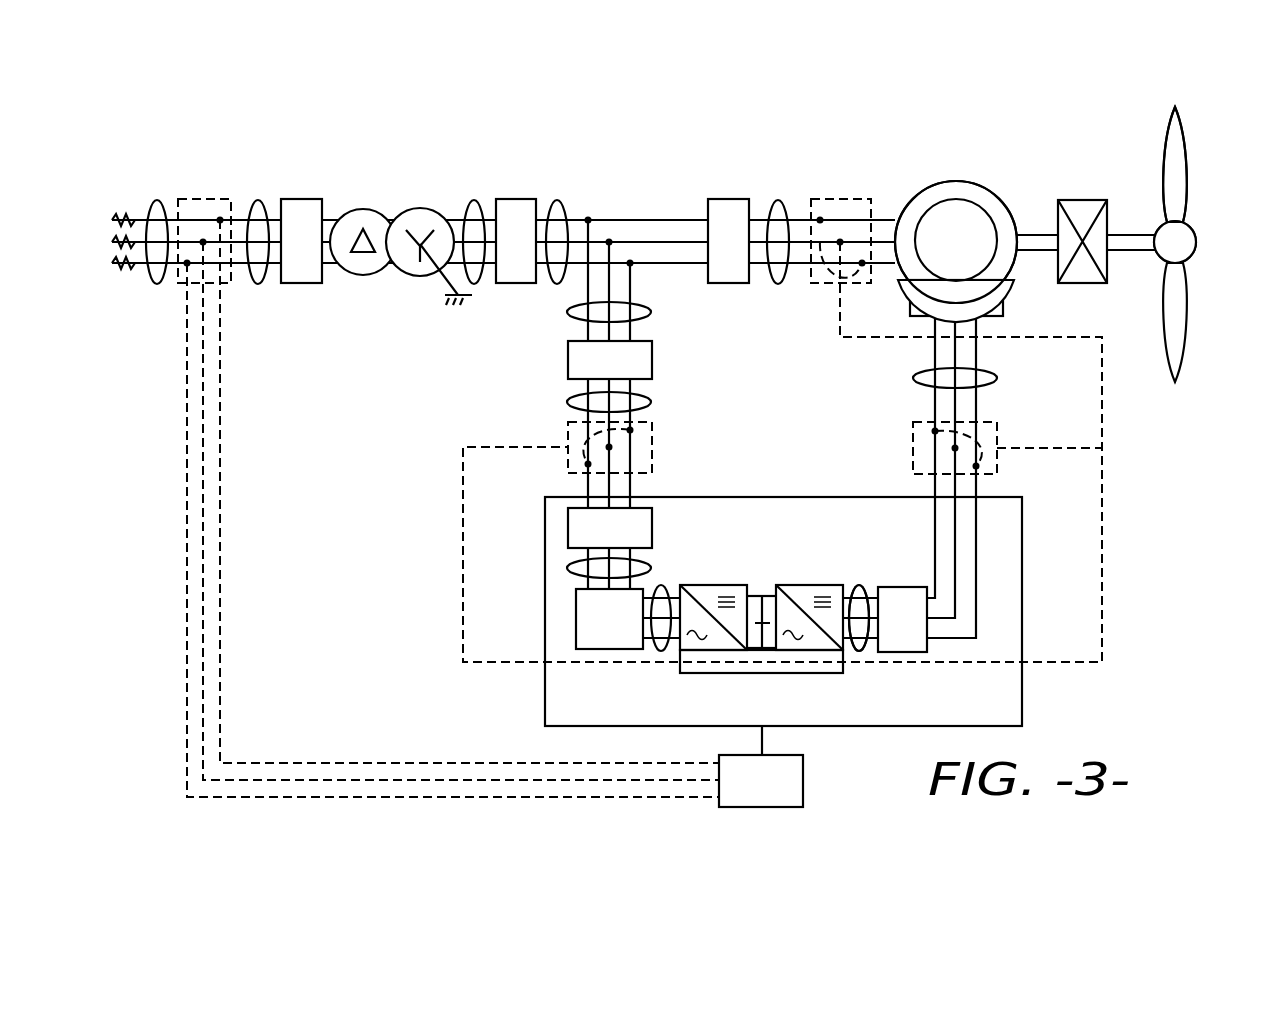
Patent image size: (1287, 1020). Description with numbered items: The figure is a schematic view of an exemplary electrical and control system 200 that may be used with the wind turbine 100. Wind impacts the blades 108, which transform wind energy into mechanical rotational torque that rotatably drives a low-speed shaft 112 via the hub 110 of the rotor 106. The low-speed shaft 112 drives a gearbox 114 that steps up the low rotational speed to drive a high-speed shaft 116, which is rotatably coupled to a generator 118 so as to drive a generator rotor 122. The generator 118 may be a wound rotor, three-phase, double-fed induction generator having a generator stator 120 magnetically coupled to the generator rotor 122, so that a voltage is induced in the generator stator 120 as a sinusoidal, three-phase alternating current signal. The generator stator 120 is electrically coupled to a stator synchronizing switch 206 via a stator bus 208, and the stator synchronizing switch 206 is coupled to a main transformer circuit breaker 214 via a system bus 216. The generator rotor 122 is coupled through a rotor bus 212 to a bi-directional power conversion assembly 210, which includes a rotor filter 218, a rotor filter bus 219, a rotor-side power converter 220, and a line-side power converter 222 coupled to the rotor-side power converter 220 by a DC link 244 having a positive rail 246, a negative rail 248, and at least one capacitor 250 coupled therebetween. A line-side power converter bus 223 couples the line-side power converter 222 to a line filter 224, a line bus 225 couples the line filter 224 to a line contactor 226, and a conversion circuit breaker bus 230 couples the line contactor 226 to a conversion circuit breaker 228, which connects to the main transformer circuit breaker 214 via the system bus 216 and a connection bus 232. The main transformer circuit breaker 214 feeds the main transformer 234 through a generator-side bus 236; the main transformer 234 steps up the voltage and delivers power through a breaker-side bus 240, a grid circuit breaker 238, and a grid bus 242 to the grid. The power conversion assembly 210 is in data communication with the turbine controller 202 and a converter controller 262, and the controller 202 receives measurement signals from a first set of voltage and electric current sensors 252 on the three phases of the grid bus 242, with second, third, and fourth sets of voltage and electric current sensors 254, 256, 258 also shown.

The wind turbine 100 is at (1141, 100).
The rotor 106 is at (1203, 206).
The blades 108 is at (1187, 162).
The hub 110 is at (1200, 237).
The low-speed shaft 112 is at (1122, 235).
The gearbox 114 is at (1086, 200).
The high-speed shaft 116 is at (1044, 235).
The generator 118 is at (949, 156).
The generator stator 120 is at (976, 186).
The generator rotor 122 is at (933, 221).
The electrical and control system 200 is at (357, 123).
The turbine controller 202 is at (741, 795).
The stator synchronizing switch 206 is at (729, 199).
The stator bus 208 is at (781, 199).
The power conversion assembly 210 is at (1022, 582).
The rotor bus 212 is at (998, 378).
The main transformer circuit breaker 214 is at (516, 199).
The system bus 216 is at (558, 198).
The rotor filter 218 is at (893, 587).
The rotor filter bus 219 is at (862, 588).
The rotor-side power converter 220 is at (858, 652).
The line-side power converter 222 is at (680, 652).
The line-side power converter bus 223 is at (662, 589).
The line filter 224 is at (576, 633).
The line bus 225 is at (568, 575).
The line contactor 226 is at (568, 533).
The conversion circuit breaker 228 is at (652, 360).
The conversion circuit breaker bus 230 is at (652, 402).
The connection bus 232 is at (652, 312).
The main transformer 234 is at (406, 208).
The generator-side bus 236 is at (474, 198).
The grid circuit breaker 238 is at (311, 199).
The breaker-side bus 240 is at (259, 198).
The grid bus 242 is at (158, 198).
The DC link 244 is at (771, 544).
The positive rail 246 is at (765, 596).
The negative rail 248 is at (767, 653).
The capacitor 250 is at (755, 620).
The first set of voltage and electric current sensors 252 is at (215, 199).
The second set of voltage and electric current sensors 254 is at (841, 180).
The third set of voltage and electric current sensors 256 is at (904, 447).
The fourth set of voltage and electric current sensors 258 is at (662, 457).
The converter controller 262 is at (802, 663).